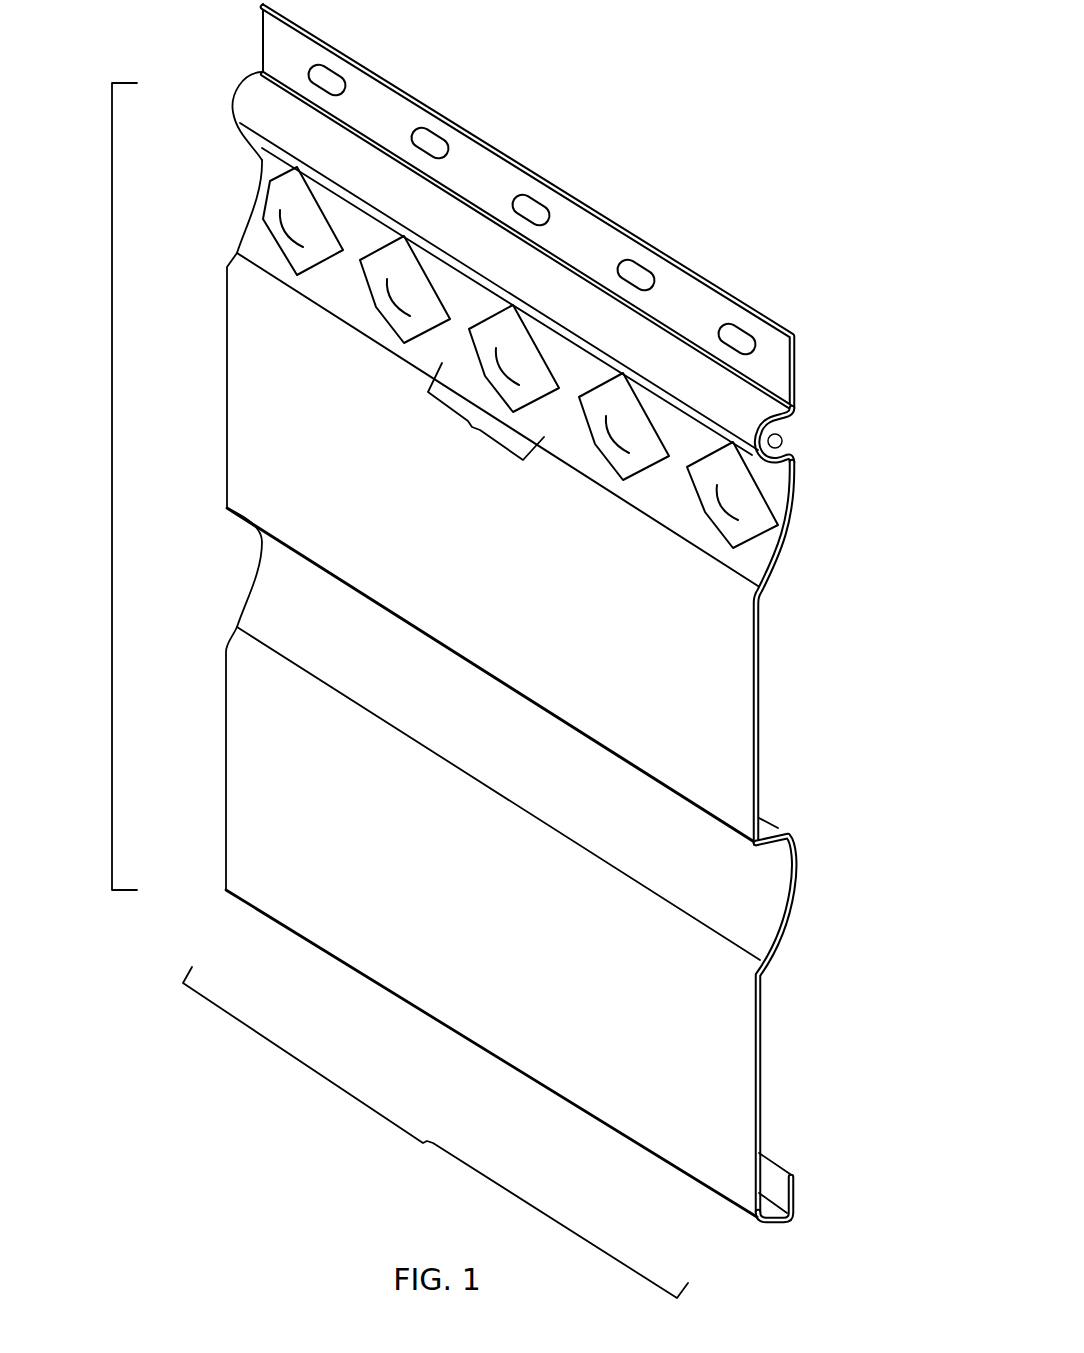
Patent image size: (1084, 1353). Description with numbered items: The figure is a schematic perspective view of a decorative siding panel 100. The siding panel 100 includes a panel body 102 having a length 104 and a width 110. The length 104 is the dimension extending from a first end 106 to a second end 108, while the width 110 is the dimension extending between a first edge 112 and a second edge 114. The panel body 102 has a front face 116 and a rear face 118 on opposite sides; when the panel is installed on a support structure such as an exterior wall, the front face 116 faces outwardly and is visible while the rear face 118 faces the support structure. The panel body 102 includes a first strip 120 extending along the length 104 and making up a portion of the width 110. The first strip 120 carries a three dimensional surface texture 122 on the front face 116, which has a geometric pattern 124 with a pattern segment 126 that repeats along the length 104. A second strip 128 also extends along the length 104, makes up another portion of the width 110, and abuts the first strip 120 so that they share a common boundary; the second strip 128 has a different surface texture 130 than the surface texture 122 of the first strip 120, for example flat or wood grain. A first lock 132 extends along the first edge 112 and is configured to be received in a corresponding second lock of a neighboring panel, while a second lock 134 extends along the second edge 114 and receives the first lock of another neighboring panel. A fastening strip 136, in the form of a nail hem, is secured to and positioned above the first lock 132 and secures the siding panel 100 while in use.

The siding panel 100 is at (826, 160).
The panel body 102 is at (858, 623).
The length 104 is at (428, 1142).
The first end 106 is at (240, 400).
The second end 108 is at (760, 707).
The width 110 is at (112, 483).
The first edge 112 is at (270, 163).
The second edge 114 is at (437, 1025).
The front face 116 is at (728, 790).
The rear face 118 is at (780, 830).
The first strip 120 is at (322, 286).
The three dimensional surface texture 122 is at (292, 207).
The geometric pattern 124 is at (781, 490).
The pattern segment 126 is at (470, 424).
The second strip 128 is at (278, 508).
The surface texture 130 is at (330, 528).
The first lock 132 is at (778, 448).
The second lock 134 is at (793, 1175).
The fastening strip 136 is at (690, 300).